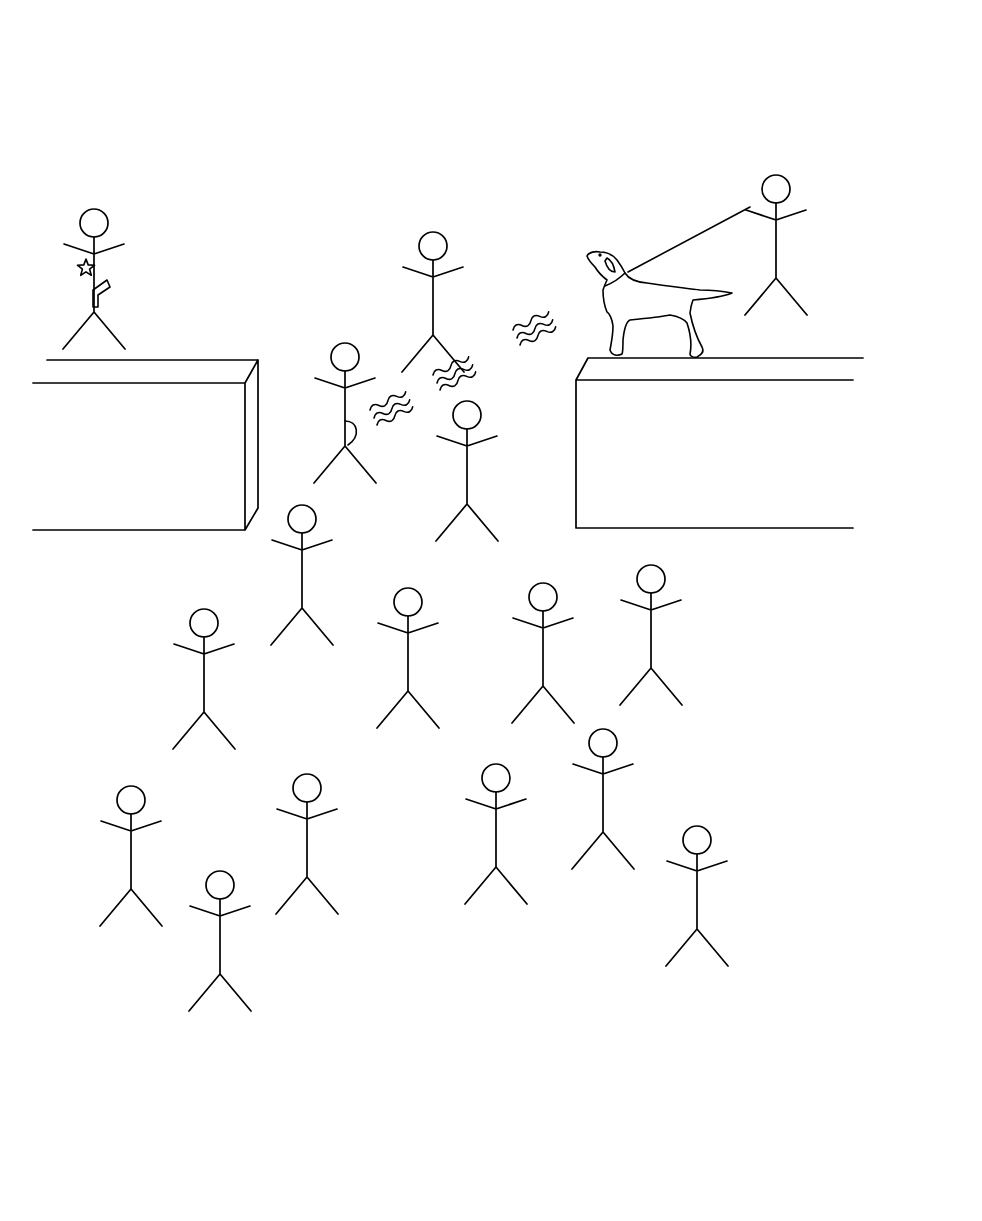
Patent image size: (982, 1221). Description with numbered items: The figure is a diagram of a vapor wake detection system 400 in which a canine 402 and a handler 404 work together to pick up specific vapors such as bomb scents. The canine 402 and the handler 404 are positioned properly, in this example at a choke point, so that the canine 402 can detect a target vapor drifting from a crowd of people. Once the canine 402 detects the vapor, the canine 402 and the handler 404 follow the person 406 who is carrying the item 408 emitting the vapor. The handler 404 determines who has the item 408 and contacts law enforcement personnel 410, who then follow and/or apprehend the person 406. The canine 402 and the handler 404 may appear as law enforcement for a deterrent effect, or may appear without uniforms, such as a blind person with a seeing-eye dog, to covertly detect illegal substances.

The vapor wake detection system 400 is at (681, 61).
The canine 402 is at (588, 238).
The handler 404 is at (765, 177).
The person 406 is at (343, 342).
The item 408 is at (357, 438).
The law enforcement personnel 410 is at (83, 202).